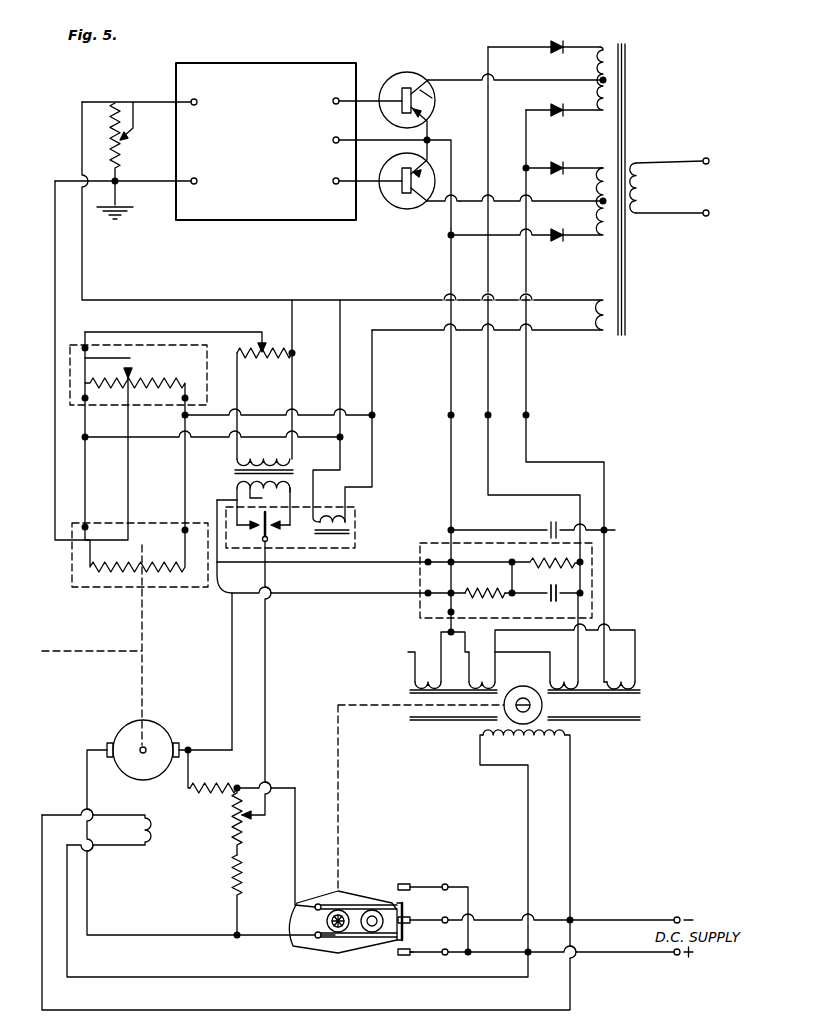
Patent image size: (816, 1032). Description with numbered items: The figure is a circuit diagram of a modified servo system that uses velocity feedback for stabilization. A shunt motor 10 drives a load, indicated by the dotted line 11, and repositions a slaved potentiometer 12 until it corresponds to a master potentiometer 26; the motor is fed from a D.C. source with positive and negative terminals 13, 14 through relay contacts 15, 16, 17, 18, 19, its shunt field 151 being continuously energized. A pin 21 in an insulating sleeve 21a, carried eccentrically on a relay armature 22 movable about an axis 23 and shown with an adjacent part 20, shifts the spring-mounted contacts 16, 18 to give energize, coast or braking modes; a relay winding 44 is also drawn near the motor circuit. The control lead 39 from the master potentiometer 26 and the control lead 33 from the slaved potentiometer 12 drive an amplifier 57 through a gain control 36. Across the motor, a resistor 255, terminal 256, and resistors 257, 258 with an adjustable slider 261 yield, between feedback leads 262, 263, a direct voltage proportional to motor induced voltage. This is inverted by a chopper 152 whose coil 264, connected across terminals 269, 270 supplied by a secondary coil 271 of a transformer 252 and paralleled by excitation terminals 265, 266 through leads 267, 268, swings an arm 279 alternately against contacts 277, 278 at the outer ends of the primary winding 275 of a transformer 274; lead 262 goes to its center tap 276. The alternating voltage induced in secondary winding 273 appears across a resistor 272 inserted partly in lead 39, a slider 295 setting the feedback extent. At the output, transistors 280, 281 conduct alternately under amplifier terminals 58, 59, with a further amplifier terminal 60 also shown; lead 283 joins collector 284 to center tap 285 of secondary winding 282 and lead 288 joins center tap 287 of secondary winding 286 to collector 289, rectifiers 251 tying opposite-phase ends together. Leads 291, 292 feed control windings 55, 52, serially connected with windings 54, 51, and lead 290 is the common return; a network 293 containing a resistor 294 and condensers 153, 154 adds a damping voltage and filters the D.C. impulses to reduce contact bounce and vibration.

The shunt motor 10 is at (114, 742).
The dotted line 11 is at (45, 650).
The slaved potentiometer 12 is at (72, 568).
The positive terminal 13 is at (676, 956).
The negative terminal 14 is at (677, 916).
The relay contact 15 is at (411, 884).
The relay contact 16 is at (411, 918).
The relay contact 17 is at (412, 950).
The relay contact 18 is at (398, 944).
The relay contact 19 is at (412, 954).
The switch cam 20 is at (342, 950).
The pin 21 is at (372, 945).
The insulating sleeve 21a is at (400, 902).
The relay armature 22 is at (292, 910).
The axis 23 is at (333, 936).
The master potentiometer 26 is at (72, 375).
The control lead 33 is at (55, 228).
The gain control 36 is at (126, 100).
The control lead 39 is at (100, 330).
The coil winding 44 is at (548, 738).
The control winding 51 is at (478, 658).
The control winding 52 is at (630, 664).
The control winding 54 is at (408, 652).
The control winding 55 is at (560, 664).
The amplifier 57 is at (273, 76).
The amplifier terminal 58 is at (338, 98).
The amplifier terminal 59 is at (338, 184).
The amplifier terminal 60 is at (338, 138).
The shunt field 151 is at (140, 848).
The chopper 152 is at (357, 508).
The condenser 153 is at (546, 528).
The condenser 154 is at (550, 598).
The rectifiers 251 is at (560, 42).
The transformer 252 is at (618, 134).
The resistor 255 is at (214, 784).
The motor terminal 256 is at (190, 746).
The resistor 257 is at (232, 822).
The resistor 258 is at (232, 878).
The adjustable slider 261 is at (262, 822).
The feedback lead 262 is at (322, 625).
The feedback lead 263 is at (267, 684).
The chopper coil 264 is at (348, 522).
The excitation terminal 265 is at (182, 416).
The excitation terminal 266 is at (96, 441).
The lead 267 is at (312, 413).
The lead 268 is at (304, 441).
The terminal 269 is at (376, 412).
The terminal 270 is at (344, 441).
The secondary coil 271 is at (592, 333).
The resistor 272 is at (266, 379).
The secondary winding 273 is at (236, 459).
The transformer 274 is at (234, 474).
The primary winding 275 is at (272, 500).
The center tap 276 is at (292, 492).
The contact 277 is at (276, 531).
The contact 278 is at (254, 532).
The arm 279 is at (268, 545).
The transistor 280 is at (404, 72).
The transistor 281 is at (394, 206).
The secondary winding 282 is at (610, 52).
The lead 283 is at (456, 78).
The collector 284 is at (433, 98).
The center tap 285 is at (598, 76).
The secondary winding 286 is at (605, 168).
The center tap 287 is at (603, 204).
The lead 288 is at (470, 206).
The collector 289 is at (430, 206).
The lead 290 is at (449, 355).
The lead 291 is at (487, 384).
The lead 292 is at (528, 382).
The network 293 is at (593, 578).
The resistor 294 is at (492, 590).
The slider 295 is at (266, 344).